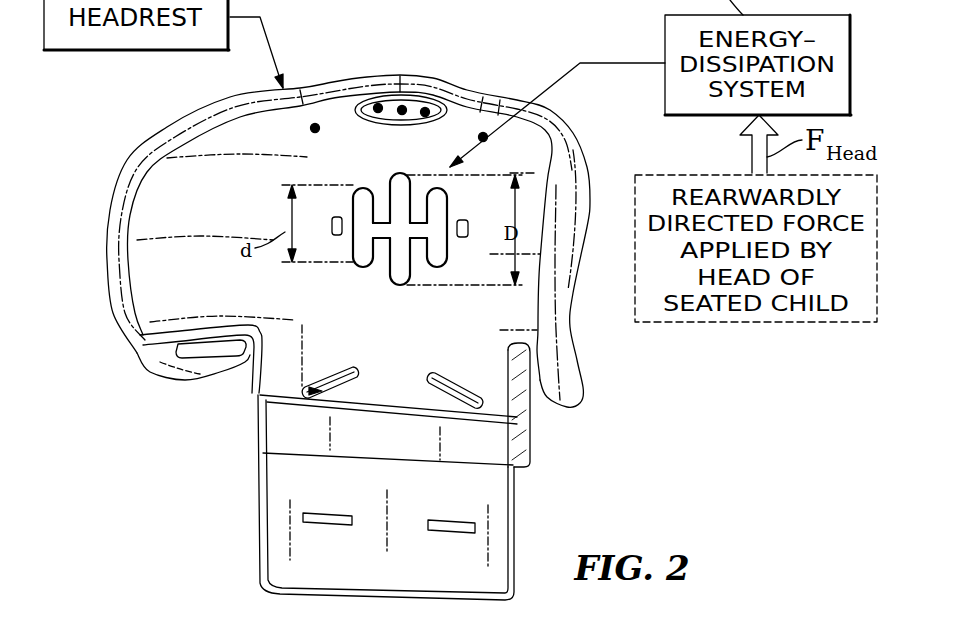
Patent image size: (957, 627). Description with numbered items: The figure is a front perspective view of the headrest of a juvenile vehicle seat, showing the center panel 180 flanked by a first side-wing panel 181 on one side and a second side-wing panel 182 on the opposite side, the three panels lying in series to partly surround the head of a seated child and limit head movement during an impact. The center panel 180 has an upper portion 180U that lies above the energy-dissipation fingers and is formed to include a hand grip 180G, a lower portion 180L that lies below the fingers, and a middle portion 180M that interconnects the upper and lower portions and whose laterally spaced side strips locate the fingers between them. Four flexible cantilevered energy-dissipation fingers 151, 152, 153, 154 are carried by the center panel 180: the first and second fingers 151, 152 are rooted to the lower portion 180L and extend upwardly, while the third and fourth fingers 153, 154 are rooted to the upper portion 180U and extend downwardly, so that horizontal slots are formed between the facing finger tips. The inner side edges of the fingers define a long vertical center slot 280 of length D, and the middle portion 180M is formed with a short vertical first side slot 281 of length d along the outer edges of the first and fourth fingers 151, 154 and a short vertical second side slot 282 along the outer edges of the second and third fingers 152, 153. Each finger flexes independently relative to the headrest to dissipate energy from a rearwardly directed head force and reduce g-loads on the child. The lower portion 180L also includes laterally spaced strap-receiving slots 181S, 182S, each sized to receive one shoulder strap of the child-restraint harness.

The center panel 180 is at (345, 115).
The hand grip 180G is at (413, 107).
The upper portion 180U is at (433, 140).
The middle portion 180M is at (322, 222).
The lower portion 180L is at (452, 352).
The first side-wing panel 181 is at (568, 220).
The strap-receiving slot 181S is at (458, 403).
The second side-wing panel 182 is at (173, 193).
The strap-receiving slot 182S is at (258, 393).
The first energy-dissipation finger 151 is at (417, 250).
The second energy-dissipation finger 152 is at (380, 240).
The third energy-dissipation finger 153 is at (380, 200).
The fourth energy-dissipation finger 154 is at (420, 213).
The long vertical center slot 280 is at (398, 263).
The short vertical first side slot 281 is at (437, 243).
The short vertical second side slot 282 is at (363, 237).